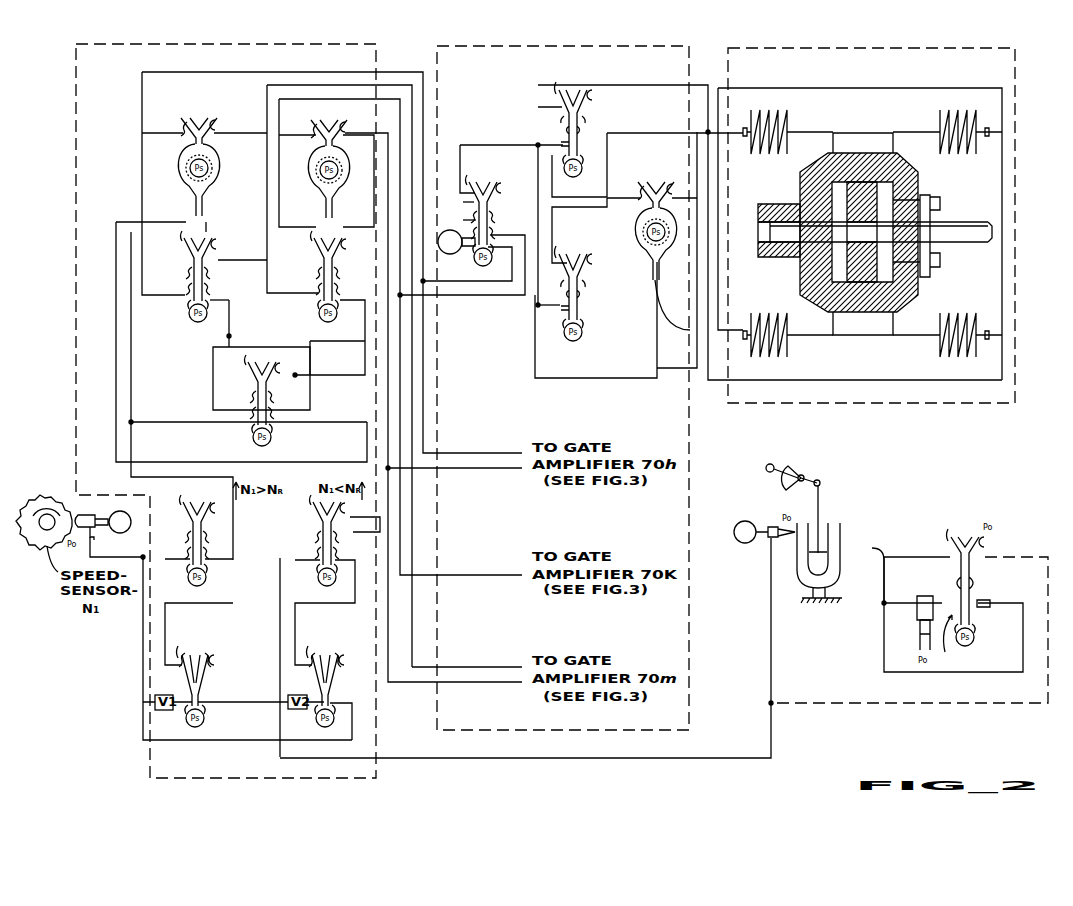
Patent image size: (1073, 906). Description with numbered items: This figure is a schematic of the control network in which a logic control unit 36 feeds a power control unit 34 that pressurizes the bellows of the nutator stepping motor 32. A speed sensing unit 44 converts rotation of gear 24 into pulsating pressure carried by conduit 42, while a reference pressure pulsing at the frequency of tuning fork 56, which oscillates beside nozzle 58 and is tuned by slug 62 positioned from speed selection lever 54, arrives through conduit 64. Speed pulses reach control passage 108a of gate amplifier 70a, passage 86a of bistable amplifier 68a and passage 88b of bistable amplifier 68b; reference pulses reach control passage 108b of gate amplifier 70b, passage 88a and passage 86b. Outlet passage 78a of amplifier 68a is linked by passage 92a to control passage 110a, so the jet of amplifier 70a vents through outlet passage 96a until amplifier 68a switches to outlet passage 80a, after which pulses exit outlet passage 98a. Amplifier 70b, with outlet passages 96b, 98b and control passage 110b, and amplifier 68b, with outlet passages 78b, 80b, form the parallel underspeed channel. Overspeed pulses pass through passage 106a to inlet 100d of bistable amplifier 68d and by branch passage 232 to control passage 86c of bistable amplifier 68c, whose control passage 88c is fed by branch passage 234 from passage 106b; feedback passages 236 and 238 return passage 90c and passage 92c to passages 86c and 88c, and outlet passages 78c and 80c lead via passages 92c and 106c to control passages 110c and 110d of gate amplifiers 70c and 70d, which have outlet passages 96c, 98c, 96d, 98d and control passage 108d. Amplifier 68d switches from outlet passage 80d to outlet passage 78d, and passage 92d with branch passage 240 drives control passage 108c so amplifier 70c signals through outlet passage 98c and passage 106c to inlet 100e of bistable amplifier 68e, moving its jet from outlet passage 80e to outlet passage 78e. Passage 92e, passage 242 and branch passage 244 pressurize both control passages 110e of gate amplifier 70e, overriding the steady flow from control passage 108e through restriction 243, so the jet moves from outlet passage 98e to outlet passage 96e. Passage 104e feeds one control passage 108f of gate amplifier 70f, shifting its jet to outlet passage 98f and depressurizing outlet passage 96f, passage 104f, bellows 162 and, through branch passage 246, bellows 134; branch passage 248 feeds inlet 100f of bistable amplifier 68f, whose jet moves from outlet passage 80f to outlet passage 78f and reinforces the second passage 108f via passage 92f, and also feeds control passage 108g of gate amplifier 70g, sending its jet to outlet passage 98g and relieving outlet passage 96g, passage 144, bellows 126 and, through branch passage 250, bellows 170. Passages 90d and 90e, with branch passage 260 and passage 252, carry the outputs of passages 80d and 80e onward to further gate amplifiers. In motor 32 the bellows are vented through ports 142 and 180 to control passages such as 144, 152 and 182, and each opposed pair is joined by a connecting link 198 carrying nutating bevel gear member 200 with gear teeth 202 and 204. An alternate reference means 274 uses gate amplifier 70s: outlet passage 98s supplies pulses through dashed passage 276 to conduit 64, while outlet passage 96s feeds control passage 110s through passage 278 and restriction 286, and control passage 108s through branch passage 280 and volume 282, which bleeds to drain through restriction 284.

The fluidic logic control circuit 36 is at (237, 38).
The fluidic amplifier section 34 is at (566, 39).
The clutch actuator assembly 32 is at (889, 40).
The pressure regulator circuit 276 is at (882, 702).
The control conduit 92d is at (238, 73).
The control conduit 90d is at (229, 133).
The control conduit 92e is at (281, 130).
The control conduit 90e is at (347, 129).
The output conduit 260 is at (455, 667).
The output conduit 252 is at (458, 469).
The input conduit 240 is at (141, 152).
The conduit 232 is at (150, 420).
The conduit 234 is at (322, 421).
The conduit 236 is at (213, 366).
The conduit 238 is at (312, 352).
The control conduit 92c is at (229, 337).
The control conduit 90c is at (328, 376).
The output passage 106c is at (222, 258).
The output passage 106b is at (328, 463).
The output passage 106a is at (233, 492).
The fluidic amplifier 70c is at (192, 288).
The control port 78d is at (186, 120).
The control port 80d is at (212, 120).
The fluidic oscillator 68d is at (186, 181).
The output passage 100d is at (193, 197).
The control port 78e is at (316, 150).
The control port 80e is at (342, 149).
The fluidic oscillator 68e is at (314, 180).
The output passage 100e is at (325, 201).
The supply conduit 243 is at (440, 238).
The control port 96c is at (190, 260).
The control port 98c is at (210, 280).
The output passage 110c is at (208, 300).
The output passage 108c is at (188, 304).
The fluidic amplifier 70d is at (322, 288).
The control port 96d is at (320, 256).
The control port 98d is at (338, 272).
The output passage 108d is at (318, 305).
The output passage 110d is at (340, 318).
The control port 78c is at (254, 374).
The control port 80c is at (272, 394).
The fluidic amplifier 68c is at (257, 397).
The control port 88c is at (272, 410).
The control port 86c is at (256, 440).
The fluidic amplifier 70a is at (190, 548).
The control port 96a is at (190, 525).
The control port 98a is at (212, 518).
The output passage 110a is at (206, 540).
The output passage 108a is at (189, 575).
The fluidic amplifier 70b is at (320, 550).
The control port 96b is at (320, 537).
The output passage 110b is at (336, 540).
The output passage 108b is at (320, 575).
The conduit 92a is at (165, 626).
The control port 78a is at (186, 670).
The fluidic amplifier 68a is at (196, 664).
The control port 80a is at (210, 666).
The control port 88a is at (206, 688).
The control port 86a is at (190, 708).
The control port 78b is at (318, 650).
The fluidic amplifier 68b is at (325, 660).
The control port 80b is at (335, 668).
The control port 86b is at (318, 700).
The control port 88b is at (336, 692).
The speed sensor gear 44 is at (54, 487).
The sensor pickup 24 is at (78, 513).
The pressure source 42 is at (102, 556).
The conduit 104e is at (511, 224).
The conduit 104f is at (655, 84).
The conduit 242 is at (480, 282).
The conduit 244 is at (484, 296).
The output passage 108g is at (537, 305).
The conduit 144 is at (642, 132).
The fluidic amplifier 70f is at (565, 135).
The control port 96f is at (560, 108).
The control port 98f is at (585, 116).
The output passage 108f is at (565, 144).
The fluidic amplifier 70e is at (471, 220).
The control port 96e is at (456, 202).
The control port 98e is at (498, 202).
The output passage 110e is at (494, 232).
The output passage 108e is at (476, 258).
The control port 78f is at (636, 214).
The control conduit 92f is at (642, 190).
The control port 80f is at (667, 190).
The fluidic oscillator 68f is at (642, 236).
The output passage 100f is at (662, 292).
The fluidic amplifier 70g is at (584, 302).
The control port 96g is at (564, 258).
The control port 98g is at (588, 282).
The conduit 248 is at (592, 380).
The control port 98b is at (382, 518).
The conduit 182 is at (890, 88).
The conduit 246 is at (725, 92).
The conduit 152 is at (724, 325).
The conduit 250 is at (852, 380).
The bellows actuator 142 is at (748, 112).
The bellows actuator 180 is at (986, 122).
The bellows 126 is at (758, 154).
The bellows 162 is at (956, 154).
The bellows 134 is at (752, 314).
The bellows 170 is at (956, 314).
The clutch housing 198 is at (856, 150).
The clutch plate 200 is at (872, 153).
The clutch plate 202 is at (838, 152).
The clutch disc 204 is at (888, 152).
The conduit 64 is at (769, 573).
The pressure nozzle 58 is at (772, 526).
The support 56 is at (796, 577).
The liquid manometer 62 is at (830, 552).
The governor 54 is at (774, 464).
The conduit 280 is at (890, 567).
The regulator housing 278 is at (884, 660).
The valve 282 is at (917, 623).
The valve stem 284 is at (920, 630).
The restrictor 286 is at (980, 607).
The fluidic amplifier 70s is at (952, 650).
The control port 96s is at (951, 552).
The control port 98s is at (982, 556).
The output passage 108s is at (950, 590).
The output passage 110s is at (978, 593).
The pressure regulator 274 is at (984, 511).